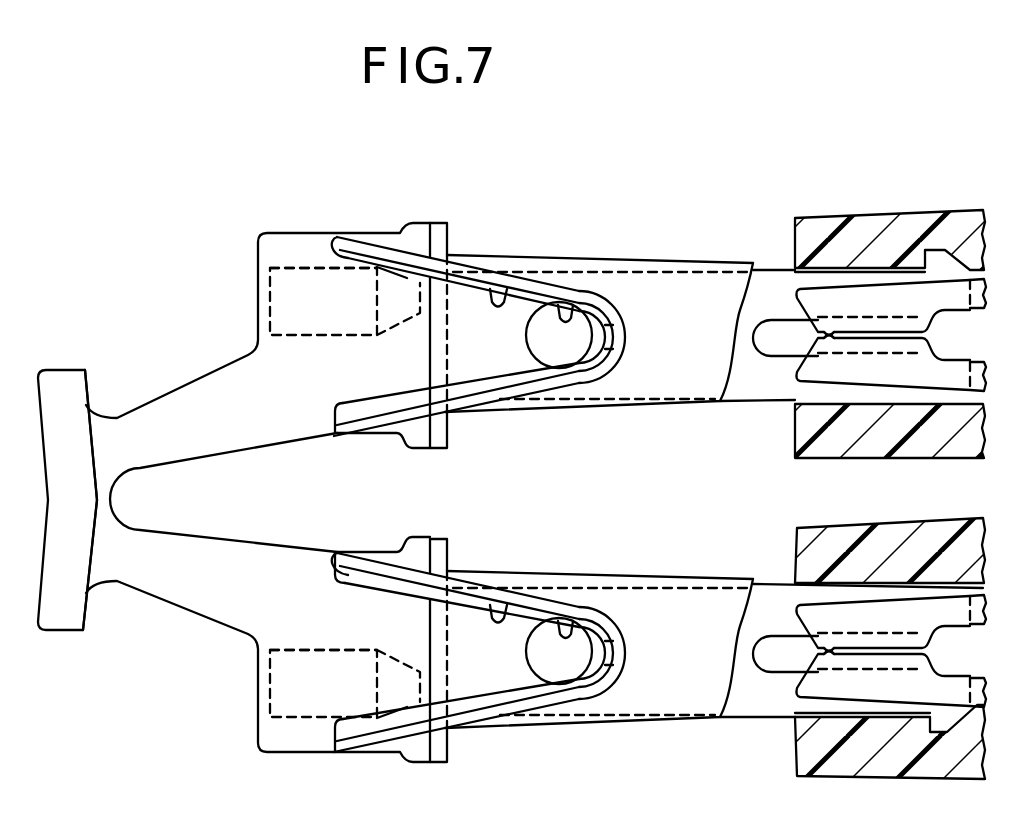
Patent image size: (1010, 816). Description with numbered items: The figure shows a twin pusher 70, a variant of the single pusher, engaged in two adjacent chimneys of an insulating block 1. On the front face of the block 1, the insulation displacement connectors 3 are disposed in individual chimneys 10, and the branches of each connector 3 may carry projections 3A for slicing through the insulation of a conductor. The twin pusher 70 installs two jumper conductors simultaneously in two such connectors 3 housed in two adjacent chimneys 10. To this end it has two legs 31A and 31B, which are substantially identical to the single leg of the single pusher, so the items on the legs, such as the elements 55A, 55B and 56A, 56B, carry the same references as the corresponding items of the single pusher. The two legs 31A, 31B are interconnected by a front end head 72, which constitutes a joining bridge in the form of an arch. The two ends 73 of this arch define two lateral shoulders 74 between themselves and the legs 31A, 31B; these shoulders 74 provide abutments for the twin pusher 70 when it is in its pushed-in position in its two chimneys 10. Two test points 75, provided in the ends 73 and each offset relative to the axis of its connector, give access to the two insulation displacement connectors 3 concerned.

The block 1 is at (793, 232).
The insulation displacement connector 3 is at (817, 338).
The projection 3A is at (855, 645).
The chimney 10 is at (804, 527).
The leg 31A is at (647, 377).
The leg 31B is at (687, 616).
The first contact ball 55A is at (572, 312).
The second contact ball 55B is at (572, 625).
The first spring clip 56A is at (515, 298).
The second spring clip 56B is at (486, 618).
The twin pusher 70 is at (153, 386).
The head 72 is at (182, 602).
The end of the arch 73 is at (315, 250).
The lateral shoulder 74 is at (447, 240).
The test point 75 is at (287, 268).